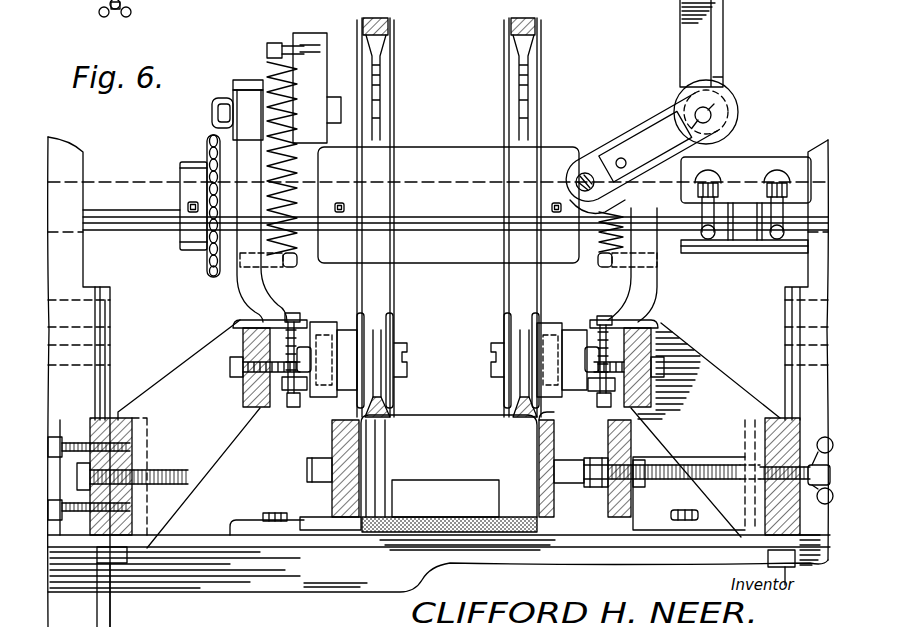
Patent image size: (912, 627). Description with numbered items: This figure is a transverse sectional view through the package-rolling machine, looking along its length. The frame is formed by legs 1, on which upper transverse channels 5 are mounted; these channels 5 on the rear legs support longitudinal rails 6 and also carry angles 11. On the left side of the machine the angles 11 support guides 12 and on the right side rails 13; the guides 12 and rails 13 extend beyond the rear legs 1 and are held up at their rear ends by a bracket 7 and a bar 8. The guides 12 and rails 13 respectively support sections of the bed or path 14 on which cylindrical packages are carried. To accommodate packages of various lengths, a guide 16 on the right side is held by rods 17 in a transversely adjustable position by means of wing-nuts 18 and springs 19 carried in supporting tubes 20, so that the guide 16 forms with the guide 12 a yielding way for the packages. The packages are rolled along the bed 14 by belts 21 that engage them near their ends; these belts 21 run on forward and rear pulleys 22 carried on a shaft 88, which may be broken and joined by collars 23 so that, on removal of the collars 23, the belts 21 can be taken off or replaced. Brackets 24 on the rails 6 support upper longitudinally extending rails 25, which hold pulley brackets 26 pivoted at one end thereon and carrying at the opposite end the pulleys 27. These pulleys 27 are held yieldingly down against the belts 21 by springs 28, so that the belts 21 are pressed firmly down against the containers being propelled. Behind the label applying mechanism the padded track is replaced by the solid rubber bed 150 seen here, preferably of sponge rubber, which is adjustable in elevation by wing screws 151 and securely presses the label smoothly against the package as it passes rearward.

The legs 1 is at (112, 347).
The upper transverse channels 5 is at (182, 597).
The longitudinal rails 6 is at (143, 424).
The bracket 7 is at (725, 42).
The bar 8 is at (609, 150).
The angles 11 is at (232, 528).
The guides 12 is at (347, 430).
The rails 13 is at (563, 430).
The bed 14 is at (405, 535).
The guide 16 is at (558, 440).
The rods 17 is at (552, 470).
The wing-nuts 18 is at (823, 498).
The springs 19 is at (562, 483).
The supporting tubes 20 is at (733, 455).
The belts 21 is at (530, 20).
The pulleys 22 is at (503, 48).
The collars 23 is at (751, 165).
The brackets 24 is at (192, 375).
The upper rails 25 is at (242, 410).
The pulley brackets 26 is at (318, 325).
The pulleys 27 is at (507, 305).
The springs 28 is at (285, 355).
The shaft 88 is at (148, 182).
The solid rubber bed 150 is at (538, 526).
The wing screws 151 is at (100, 15).